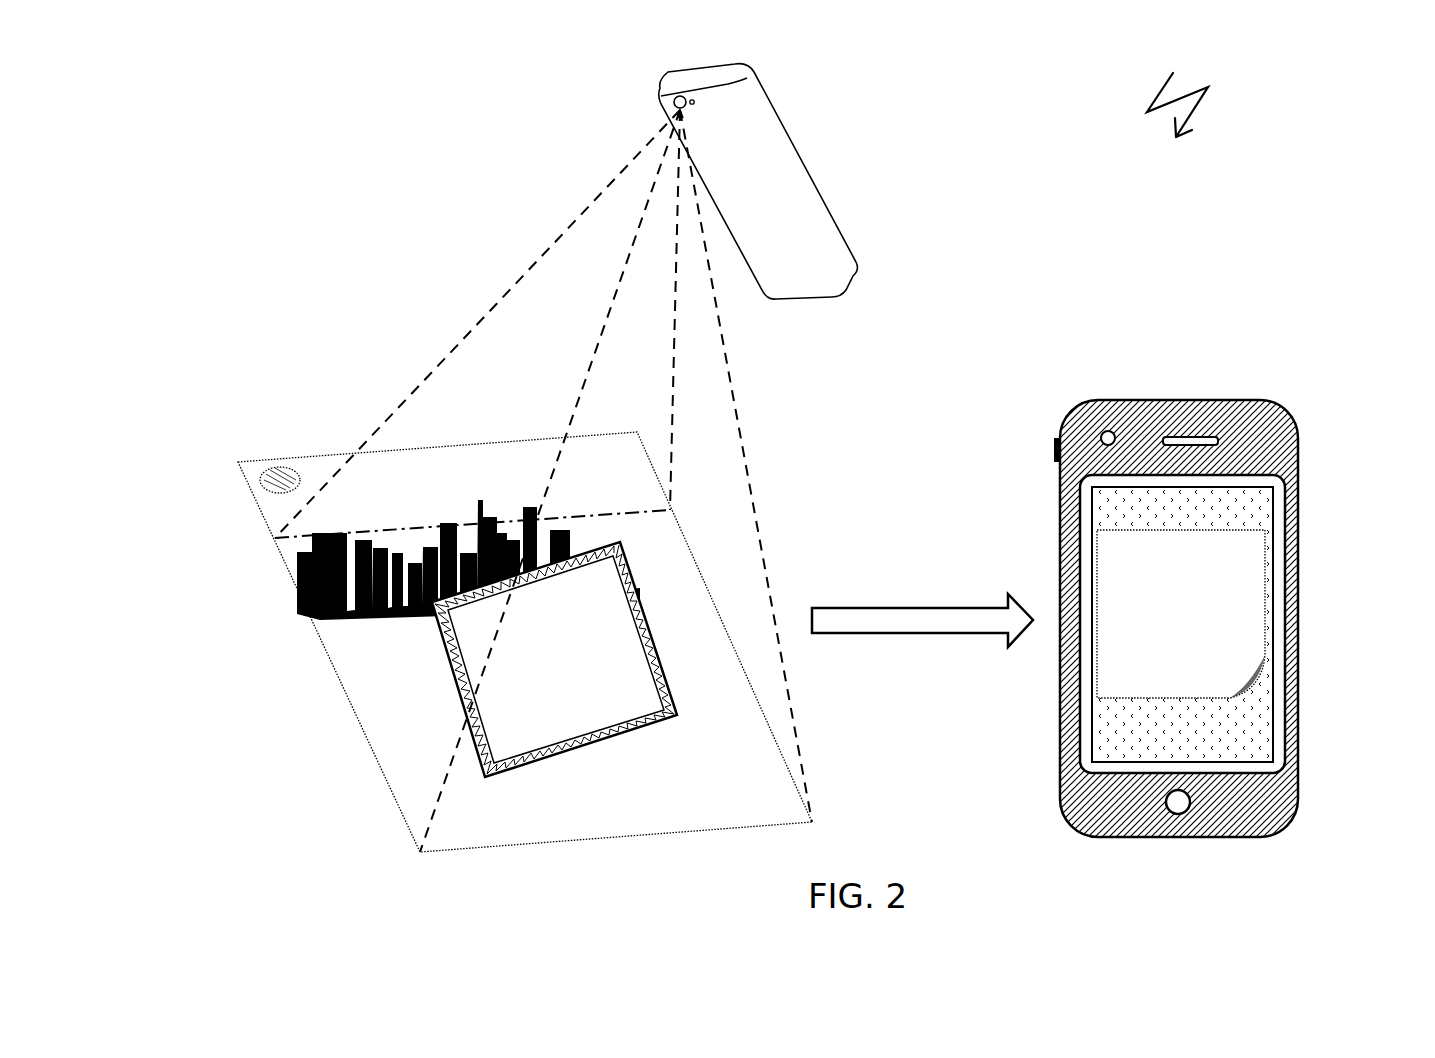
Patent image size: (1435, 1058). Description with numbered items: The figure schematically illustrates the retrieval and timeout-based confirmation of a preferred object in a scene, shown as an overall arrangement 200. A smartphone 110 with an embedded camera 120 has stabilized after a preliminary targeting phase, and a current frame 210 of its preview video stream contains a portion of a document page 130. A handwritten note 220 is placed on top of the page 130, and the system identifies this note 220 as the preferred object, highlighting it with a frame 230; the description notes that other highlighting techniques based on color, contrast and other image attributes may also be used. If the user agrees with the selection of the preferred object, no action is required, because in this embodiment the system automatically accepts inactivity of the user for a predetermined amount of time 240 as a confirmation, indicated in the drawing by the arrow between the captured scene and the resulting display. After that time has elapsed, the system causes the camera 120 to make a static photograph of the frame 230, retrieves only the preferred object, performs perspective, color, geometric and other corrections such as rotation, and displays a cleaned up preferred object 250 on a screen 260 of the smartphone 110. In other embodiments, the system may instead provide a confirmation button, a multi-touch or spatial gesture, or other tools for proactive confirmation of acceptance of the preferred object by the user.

The smartphone 110 is at (798, 121).
The camera 120 is at (665, 101).
The document page 130 is at (255, 517).
The environment 200 is at (1177, 89).
The current frame 210 is at (307, 630).
The handwritten note 220 is at (475, 658).
The frame 230 is at (630, 583).
The predetermined amount of time 240 is at (865, 560).
The cleaned up preferred object 250 is at (1253, 585).
The screen 260 is at (1260, 483).